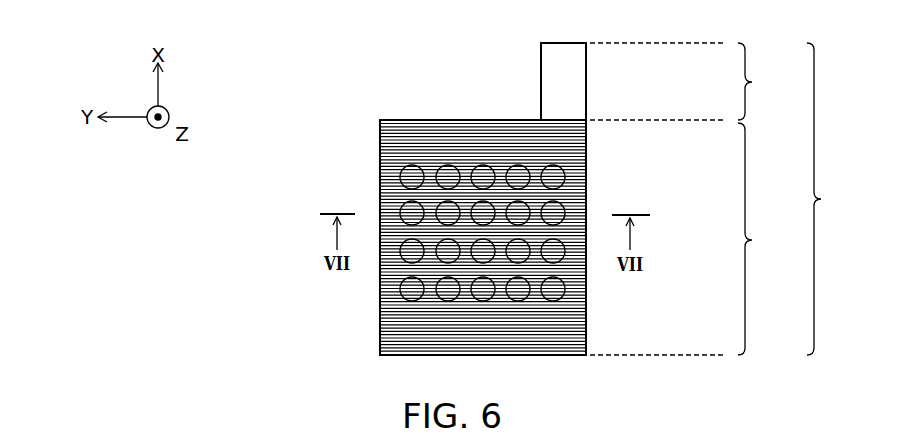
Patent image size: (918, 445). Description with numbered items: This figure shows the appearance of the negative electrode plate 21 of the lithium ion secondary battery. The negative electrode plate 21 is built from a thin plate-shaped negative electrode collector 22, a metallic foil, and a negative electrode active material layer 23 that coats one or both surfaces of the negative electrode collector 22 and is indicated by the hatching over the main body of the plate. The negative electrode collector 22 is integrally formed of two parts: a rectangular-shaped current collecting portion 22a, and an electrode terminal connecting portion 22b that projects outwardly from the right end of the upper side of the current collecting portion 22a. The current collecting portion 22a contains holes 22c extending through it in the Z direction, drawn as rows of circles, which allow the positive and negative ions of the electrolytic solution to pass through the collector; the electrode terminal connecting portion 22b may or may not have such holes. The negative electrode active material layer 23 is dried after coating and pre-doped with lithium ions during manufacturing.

The negative electrode plate 21 is at (356, 130).
The negative electrode collector 22 is at (556, 199).
The current collecting portion 22a is at (590, 239).
The electrode terminal connecting portion 22b is at (670, 81).
The holes 22c is at (404, 205).
The negative electrode active material layer 23 is at (420, 310).